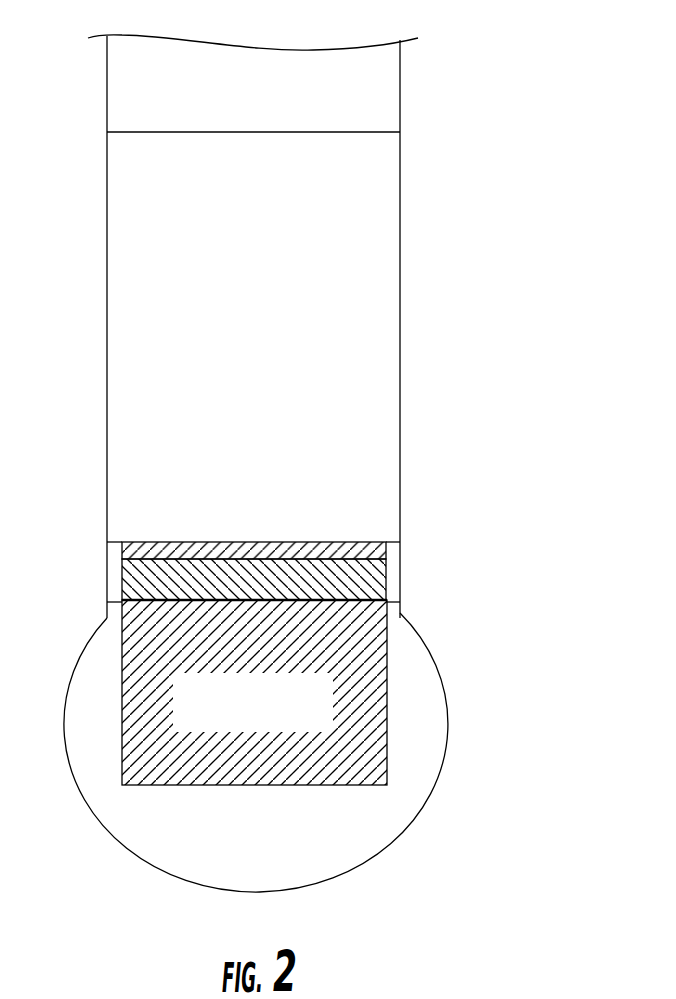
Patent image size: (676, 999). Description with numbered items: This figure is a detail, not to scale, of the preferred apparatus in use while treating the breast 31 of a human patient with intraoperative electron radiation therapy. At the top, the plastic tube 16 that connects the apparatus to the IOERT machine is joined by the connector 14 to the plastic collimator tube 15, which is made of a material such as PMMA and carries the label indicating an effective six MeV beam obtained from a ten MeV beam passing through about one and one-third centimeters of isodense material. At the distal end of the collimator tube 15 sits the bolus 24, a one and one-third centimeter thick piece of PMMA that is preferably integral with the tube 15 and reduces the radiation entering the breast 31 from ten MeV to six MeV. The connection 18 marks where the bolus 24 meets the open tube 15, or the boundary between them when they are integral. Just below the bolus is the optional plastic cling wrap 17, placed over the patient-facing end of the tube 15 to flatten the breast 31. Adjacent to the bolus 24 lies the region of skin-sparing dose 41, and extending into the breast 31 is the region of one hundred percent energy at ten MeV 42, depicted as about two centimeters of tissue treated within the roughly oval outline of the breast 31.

The connector 14 is at (383, 131).
The plastic collimator tube 15 is at (401, 283).
The plastic tube 16 is at (401, 75).
The plastic cling wrap 17 is at (393, 597).
The connection 18 is at (393, 540).
The bolus 24 is at (130, 592).
The human breast 31 is at (437, 783).
The region of skin-sparing dose 41 is at (133, 552).
The region of 100% energy at 10 MeV 42 is at (387, 677).